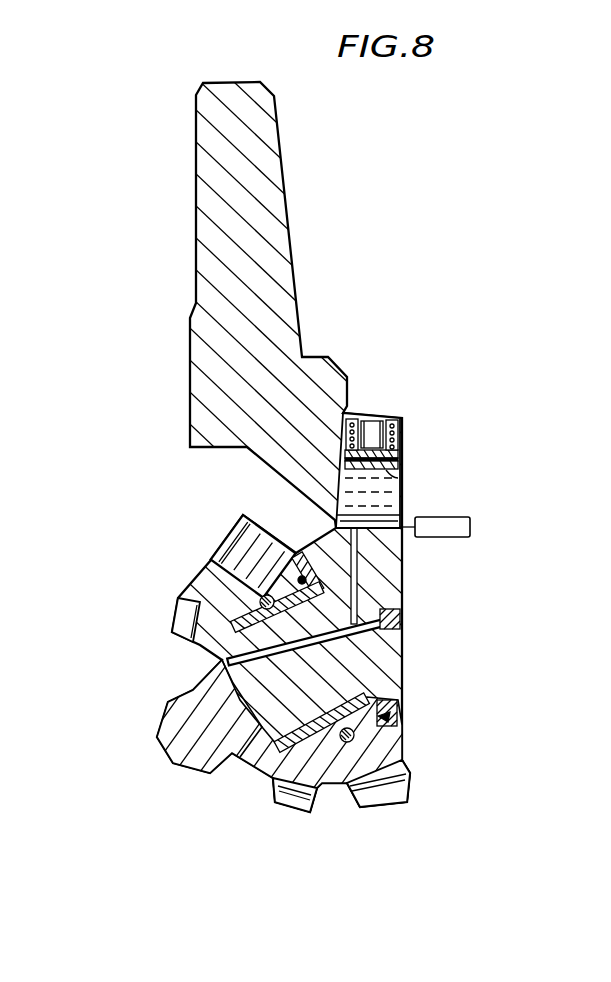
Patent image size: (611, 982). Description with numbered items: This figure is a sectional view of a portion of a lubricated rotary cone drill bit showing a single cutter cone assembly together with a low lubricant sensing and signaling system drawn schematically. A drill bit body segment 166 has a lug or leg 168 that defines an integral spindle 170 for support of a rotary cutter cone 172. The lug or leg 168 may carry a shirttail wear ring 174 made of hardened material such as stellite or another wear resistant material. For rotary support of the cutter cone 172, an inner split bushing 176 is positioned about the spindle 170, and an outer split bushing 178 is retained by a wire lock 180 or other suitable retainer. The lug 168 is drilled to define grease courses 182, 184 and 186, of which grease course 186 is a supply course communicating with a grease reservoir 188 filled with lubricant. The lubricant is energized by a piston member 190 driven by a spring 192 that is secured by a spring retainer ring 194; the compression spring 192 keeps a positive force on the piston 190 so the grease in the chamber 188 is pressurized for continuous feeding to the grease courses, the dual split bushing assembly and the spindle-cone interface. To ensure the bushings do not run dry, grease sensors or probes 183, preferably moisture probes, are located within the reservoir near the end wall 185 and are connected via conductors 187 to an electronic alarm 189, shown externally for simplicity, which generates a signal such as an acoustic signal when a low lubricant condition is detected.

The drill bit body segment 166 is at (210, 190).
The lug or leg 168 is at (390, 572).
The integral spindle 170 is at (272, 710).
The rotary cutter cone 172 is at (184, 735).
The shirttail wear ring 174 is at (402, 712).
The inner split bushing 176 is at (193, 644).
The outer split bushing 178 is at (298, 578).
The wire lock 180 is at (262, 603).
The grease course 182 is at (383, 648).
The grease sensors or probes 183 is at (331, 521).
The grease course 184 is at (232, 675).
The end wall 185 is at (262, 532).
The grease course 186 is at (362, 596).
The conductors 187 is at (412, 513).
The grease reservoir 188 is at (391, 490).
The electronic alarm 189 is at (470, 528).
The piston member 190 is at (378, 509).
The spring 192 is at (389, 418).
The spring retainer ring 194 is at (346, 412).